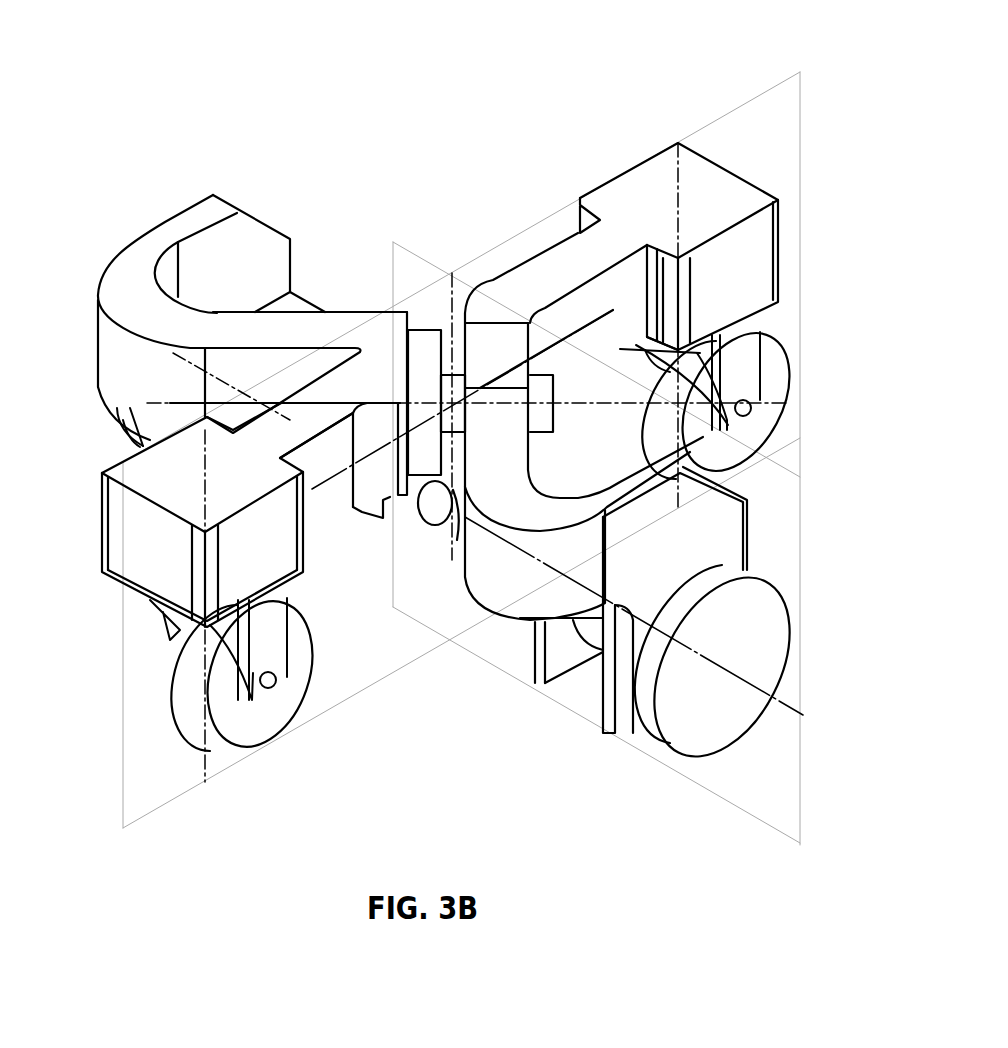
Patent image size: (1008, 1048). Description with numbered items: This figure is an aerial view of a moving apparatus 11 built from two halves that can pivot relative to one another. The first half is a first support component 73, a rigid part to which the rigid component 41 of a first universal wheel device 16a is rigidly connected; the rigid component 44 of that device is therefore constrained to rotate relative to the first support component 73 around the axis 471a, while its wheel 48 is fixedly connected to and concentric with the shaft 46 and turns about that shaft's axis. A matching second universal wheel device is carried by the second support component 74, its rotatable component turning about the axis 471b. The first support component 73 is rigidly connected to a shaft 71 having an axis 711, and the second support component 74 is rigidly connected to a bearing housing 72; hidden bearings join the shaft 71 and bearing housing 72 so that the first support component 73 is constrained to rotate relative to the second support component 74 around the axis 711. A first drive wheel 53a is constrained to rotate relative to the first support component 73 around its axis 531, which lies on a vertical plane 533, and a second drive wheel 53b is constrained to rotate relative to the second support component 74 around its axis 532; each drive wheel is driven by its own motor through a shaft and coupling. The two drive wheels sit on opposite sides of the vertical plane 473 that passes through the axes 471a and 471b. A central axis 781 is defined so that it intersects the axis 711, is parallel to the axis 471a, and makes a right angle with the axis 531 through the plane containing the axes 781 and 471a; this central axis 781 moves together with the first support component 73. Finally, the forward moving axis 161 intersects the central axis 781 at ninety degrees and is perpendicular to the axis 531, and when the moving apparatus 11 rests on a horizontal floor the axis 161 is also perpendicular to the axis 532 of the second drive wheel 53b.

The moving apparatus 11 is at (204, 140).
The first universal wheel device 16a is at (790, 332).
The rigid component 41 is at (130, 593).
The rigid component 44 is at (270, 612).
The shaft 46 is at (260, 688).
The wheel 48 is at (757, 430).
The first drive wheel 53a is at (775, 617).
The second drive wheel 53b is at (135, 438).
The shaft 71 is at (537, 392).
The bearing housing 72 is at (430, 350).
The first support component 73 is at (575, 250).
The second support component 74 is at (122, 345).
The forward moving axis 161 is at (570, 335).
The axis 471a is at (676, 190).
The axis 471b is at (200, 480).
The vertical plane 473 is at (142, 797).
The axis 531 is at (697, 657).
The axis 532 is at (190, 364).
The vertical plane 533 is at (782, 775).
The axis 711 is at (765, 402).
The central axis 781 is at (447, 593).